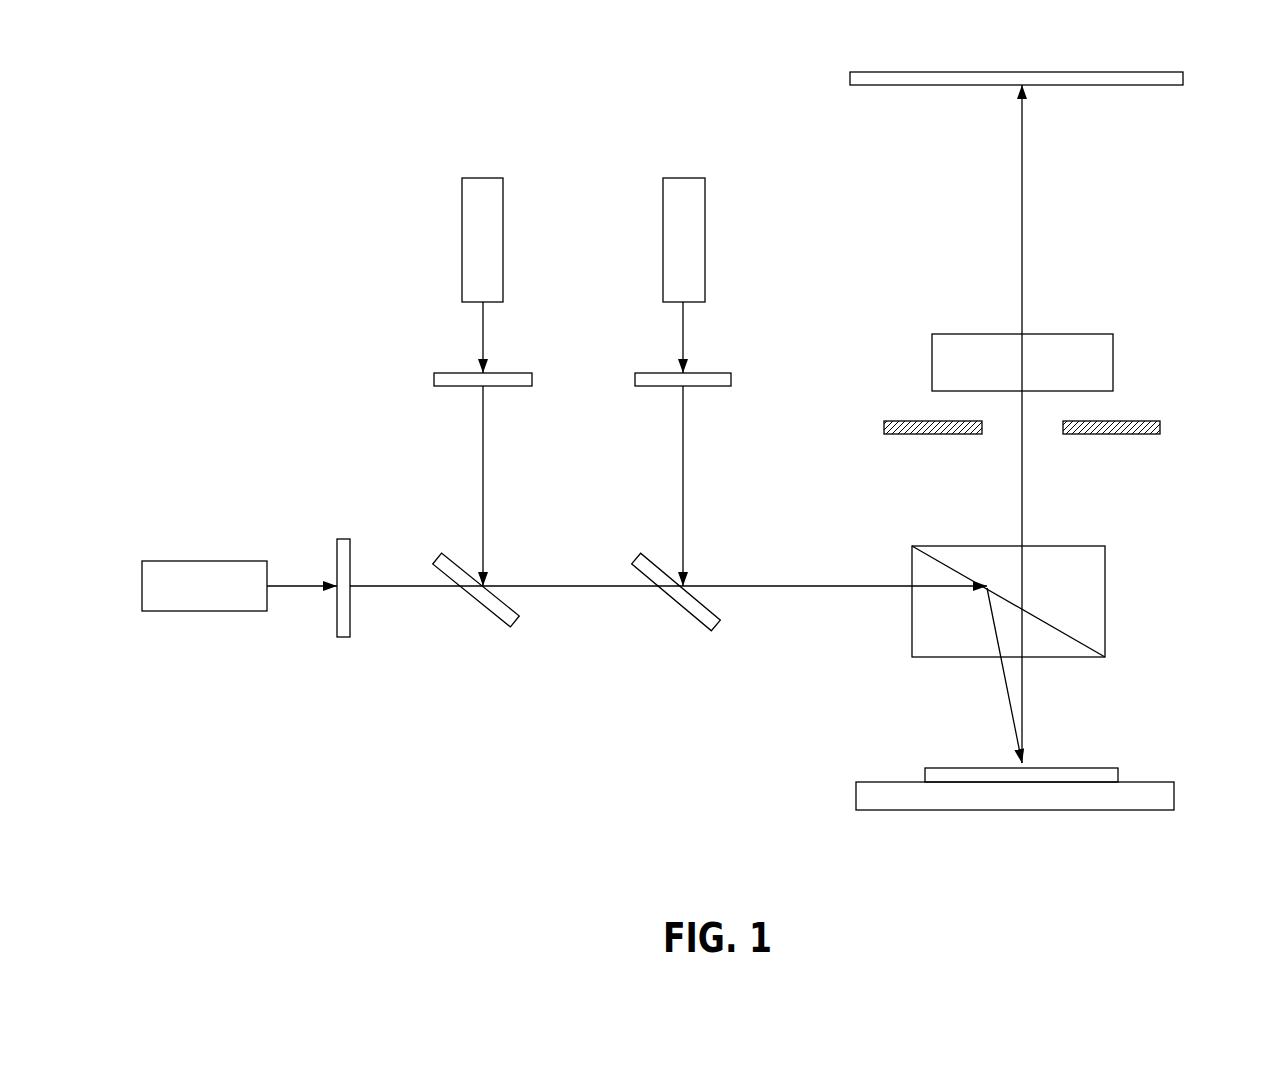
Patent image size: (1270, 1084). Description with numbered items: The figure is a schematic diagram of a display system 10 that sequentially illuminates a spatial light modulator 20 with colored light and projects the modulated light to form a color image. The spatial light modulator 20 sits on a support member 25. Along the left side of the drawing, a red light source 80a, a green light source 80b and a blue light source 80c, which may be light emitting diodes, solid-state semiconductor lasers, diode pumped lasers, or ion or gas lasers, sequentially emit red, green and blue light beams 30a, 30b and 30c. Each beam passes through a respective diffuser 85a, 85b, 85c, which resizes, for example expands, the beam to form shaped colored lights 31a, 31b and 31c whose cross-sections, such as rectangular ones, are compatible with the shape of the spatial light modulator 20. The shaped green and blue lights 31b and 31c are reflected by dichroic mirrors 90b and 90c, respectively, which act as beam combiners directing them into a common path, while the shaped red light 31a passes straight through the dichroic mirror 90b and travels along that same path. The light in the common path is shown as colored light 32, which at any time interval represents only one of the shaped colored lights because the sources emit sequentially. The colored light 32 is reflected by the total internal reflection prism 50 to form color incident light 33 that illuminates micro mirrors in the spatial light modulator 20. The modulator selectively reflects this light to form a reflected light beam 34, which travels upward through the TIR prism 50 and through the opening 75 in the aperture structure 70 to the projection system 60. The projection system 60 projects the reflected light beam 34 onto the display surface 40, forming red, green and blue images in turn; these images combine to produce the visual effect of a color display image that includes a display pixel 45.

The display system 10 is at (308, 122).
The spatial light modulator 20 is at (1095, 767).
The support member 25 is at (1158, 796).
The red light beam 30a is at (305, 579).
The green light beam 30b is at (480, 332).
The blue light beam 30c is at (681, 328).
The shaped red colored light 31a is at (417, 591).
The shaped green colored light 31b is at (480, 458).
The shaped blue colored light 31c is at (681, 458).
The colored light 32 is at (861, 591).
The color incident light 33 is at (1011, 719).
The reflected light beam 34 is at (1020, 523).
The display surface 40 is at (1135, 77).
The display pixel 45 is at (1032, 88).
The total internal reflection (TIR) prism 50 is at (1087, 596).
The projection system 60 is at (948, 363).
The aperture structure 70 is at (892, 422).
The opening 75 is at (1052, 447).
The red light source 80a is at (170, 577).
The green light source 80b is at (482, 227).
The blue light source 80c is at (690, 227).
The diffuser 85a is at (343, 627).
The diffuser 85b is at (468, 384).
The diffuser 85c is at (663, 380).
The dichroic mirror 90b is at (442, 567).
The dichroic mirror 90c is at (647, 567).